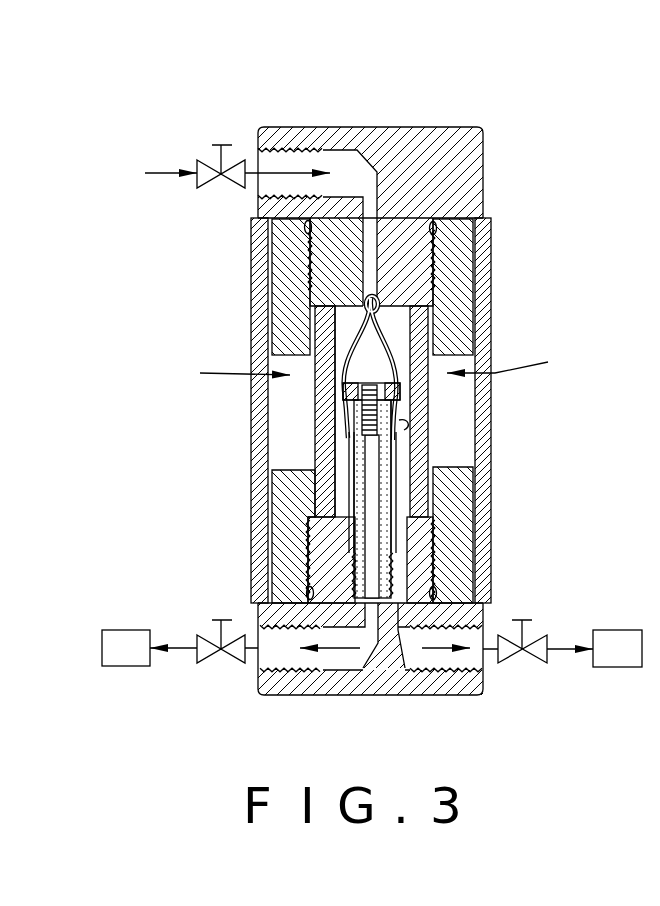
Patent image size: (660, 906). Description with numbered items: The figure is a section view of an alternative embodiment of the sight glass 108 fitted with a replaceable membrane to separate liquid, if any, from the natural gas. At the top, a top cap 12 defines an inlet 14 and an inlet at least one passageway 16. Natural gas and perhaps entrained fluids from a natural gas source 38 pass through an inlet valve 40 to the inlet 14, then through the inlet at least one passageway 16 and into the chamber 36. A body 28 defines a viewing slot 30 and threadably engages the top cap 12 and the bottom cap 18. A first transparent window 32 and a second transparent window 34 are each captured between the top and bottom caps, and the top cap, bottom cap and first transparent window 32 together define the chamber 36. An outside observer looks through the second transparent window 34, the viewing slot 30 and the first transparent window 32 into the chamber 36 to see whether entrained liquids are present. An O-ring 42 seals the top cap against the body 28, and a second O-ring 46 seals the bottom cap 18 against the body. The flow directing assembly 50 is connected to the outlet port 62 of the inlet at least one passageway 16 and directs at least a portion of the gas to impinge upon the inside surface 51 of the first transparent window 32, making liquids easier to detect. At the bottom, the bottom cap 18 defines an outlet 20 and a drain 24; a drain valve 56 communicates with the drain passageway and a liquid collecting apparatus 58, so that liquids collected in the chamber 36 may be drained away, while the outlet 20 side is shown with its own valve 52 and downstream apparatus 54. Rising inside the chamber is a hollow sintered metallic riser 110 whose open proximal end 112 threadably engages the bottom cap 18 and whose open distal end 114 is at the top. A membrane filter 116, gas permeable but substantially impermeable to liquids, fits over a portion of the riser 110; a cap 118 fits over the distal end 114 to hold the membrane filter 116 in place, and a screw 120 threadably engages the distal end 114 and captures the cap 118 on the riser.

The sight glass 108 is at (520, 96).
The top cap 12 is at (440, 128).
The inlet 14 is at (298, 160).
The inlet at least one passageway 16 is at (398, 205).
The body 28 is at (457, 251).
The viewing slot 30 is at (373, 362).
The first transparent window 32 is at (428, 337).
The second transparent window 34 is at (493, 289).
The chamber 36 is at (295, 490).
The natural gas source 38 is at (128, 190).
The inlet valve 40 is at (203, 164).
The O-ring 42 is at (433, 220).
The second O-ring 46 is at (435, 591).
The flow directing assembly 50 is at (348, 330).
The inside surface 51 is at (399, 424).
The outlet valve 52 is at (246, 665).
The outlet device 54 is at (138, 667).
The drain valve 56 is at (503, 664).
The liquid collecting apparatus 58 is at (596, 668).
The outlet port 62 is at (362, 296).
The hollow sintered metallic riser 110 is at (390, 500).
The open proximal end 112 is at (310, 580).
The open distal end 114 is at (398, 406).
The membrane filter 116 is at (400, 470).
The cap 118 is at (360, 412).
The screw 120 is at (358, 376).
The bottom cap 18 is at (366, 680).
The outlet 20 is at (300, 670).
The drain 24 is at (447, 668).